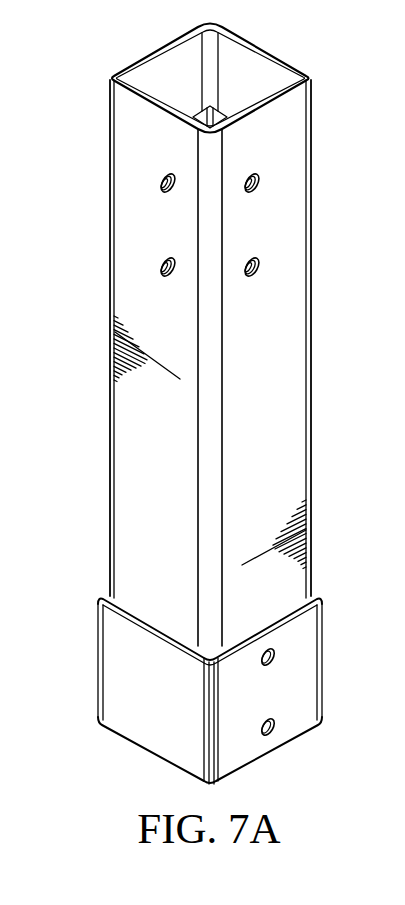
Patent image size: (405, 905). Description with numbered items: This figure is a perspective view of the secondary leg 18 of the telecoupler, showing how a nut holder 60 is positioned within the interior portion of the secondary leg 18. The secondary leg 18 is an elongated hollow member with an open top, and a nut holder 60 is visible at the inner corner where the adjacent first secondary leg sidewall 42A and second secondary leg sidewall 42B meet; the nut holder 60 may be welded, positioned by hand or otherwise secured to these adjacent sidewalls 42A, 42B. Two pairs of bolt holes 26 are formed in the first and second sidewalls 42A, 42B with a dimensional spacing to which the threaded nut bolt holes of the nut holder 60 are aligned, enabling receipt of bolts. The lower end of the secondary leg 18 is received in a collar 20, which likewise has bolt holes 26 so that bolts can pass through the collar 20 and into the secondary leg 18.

The secondary leg 18 is at (312, 488).
The collar 20 is at (97, 667).
The bolt holes 26 is at (163, 191).
The first secondary leg sidewall 42A is at (124, 442).
The second secondary leg sidewall 42B is at (298, 389).
The nut holder 60 is at (224, 111).